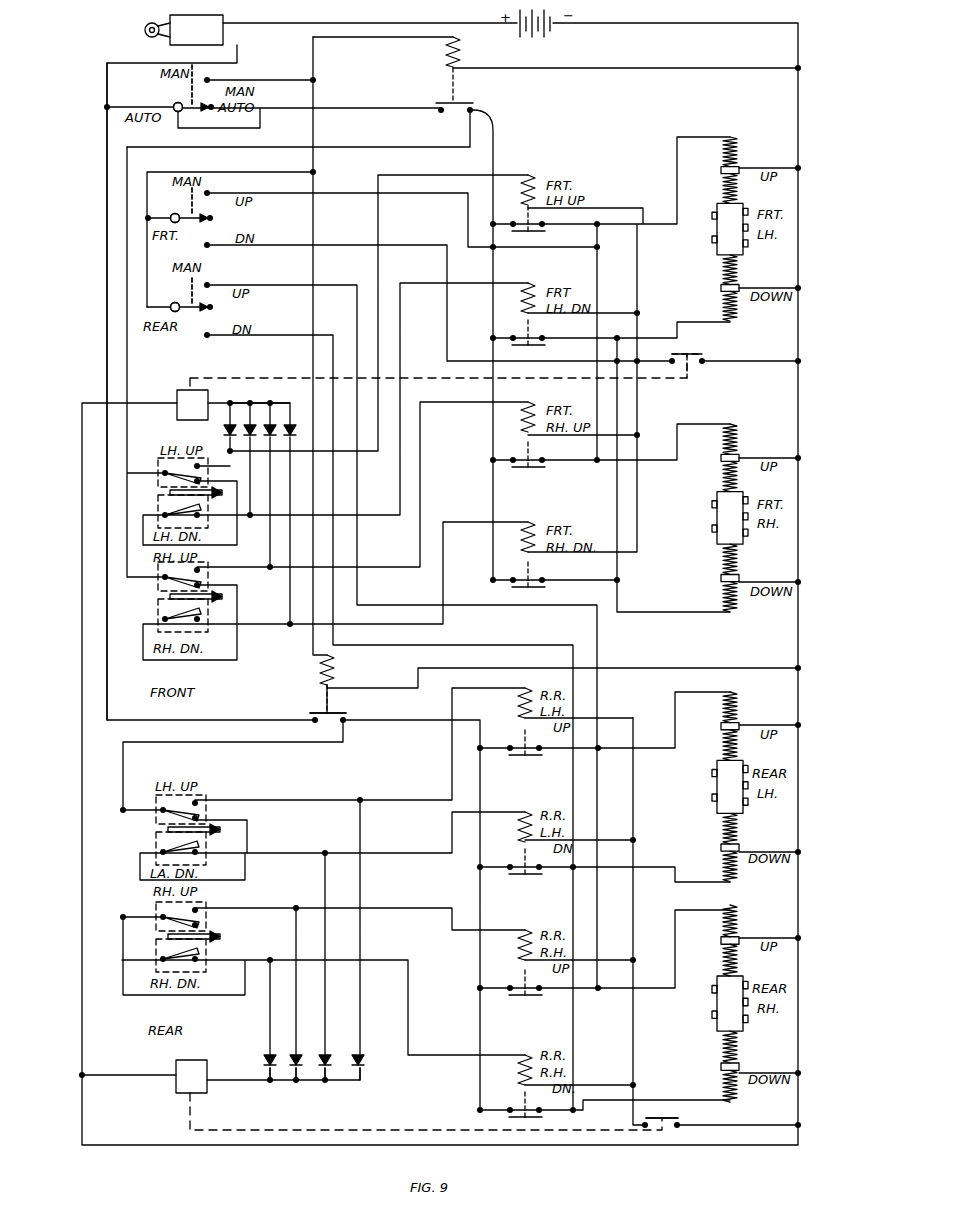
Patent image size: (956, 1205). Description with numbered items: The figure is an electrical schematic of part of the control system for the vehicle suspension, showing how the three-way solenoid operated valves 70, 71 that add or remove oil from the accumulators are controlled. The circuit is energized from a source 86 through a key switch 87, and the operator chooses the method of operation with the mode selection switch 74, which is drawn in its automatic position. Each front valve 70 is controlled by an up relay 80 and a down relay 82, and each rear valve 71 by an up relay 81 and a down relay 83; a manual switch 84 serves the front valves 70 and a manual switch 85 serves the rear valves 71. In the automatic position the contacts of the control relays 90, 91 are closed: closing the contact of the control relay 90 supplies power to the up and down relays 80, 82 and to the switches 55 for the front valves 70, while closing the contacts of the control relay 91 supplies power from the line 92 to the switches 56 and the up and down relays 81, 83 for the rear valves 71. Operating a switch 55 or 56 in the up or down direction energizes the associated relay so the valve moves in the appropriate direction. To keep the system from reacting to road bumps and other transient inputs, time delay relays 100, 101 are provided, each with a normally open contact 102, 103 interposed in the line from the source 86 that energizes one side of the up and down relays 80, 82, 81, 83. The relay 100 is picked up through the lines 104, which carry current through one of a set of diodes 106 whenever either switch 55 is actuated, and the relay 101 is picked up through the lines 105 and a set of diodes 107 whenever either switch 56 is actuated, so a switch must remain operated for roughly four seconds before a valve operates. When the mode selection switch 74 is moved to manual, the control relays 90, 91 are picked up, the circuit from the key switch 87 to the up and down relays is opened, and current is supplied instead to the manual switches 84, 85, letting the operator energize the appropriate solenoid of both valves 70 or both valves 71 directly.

The key switch 87 is at (226, 17).
The source 86 is at (553, 32).
The mode selection switch 74 is at (186, 98).
The control relay 90 is at (452, 82).
The line 92 is at (107, 258).
The manual switch 84 is at (242, 218).
The manual switch 85 is at (240, 307).
The time delay relay 100 is at (178, 390).
The lines 104 is at (292, 394).
The set of diodes 106 is at (214, 435).
The switches 55 is at (163, 500).
The control relay 91 is at (326, 710).
The switches 56 is at (163, 838).
The time delay relay 101 is at (176, 1062).
The set of diodes 107 is at (254, 1071).
The lines 105 is at (366, 1093).
The up relay 80 is at (533, 223).
The down relay 82 is at (533, 332).
The up relay 81 is at (510, 718).
The down relay 83 is at (520, 852).
The three-way solenoid operated valve 70 is at (716, 230).
The three-way solenoid operated valve 71 is at (716, 777).
The normally open contact 102 is at (704, 358).
The normally open contact 103 is at (686, 1128).